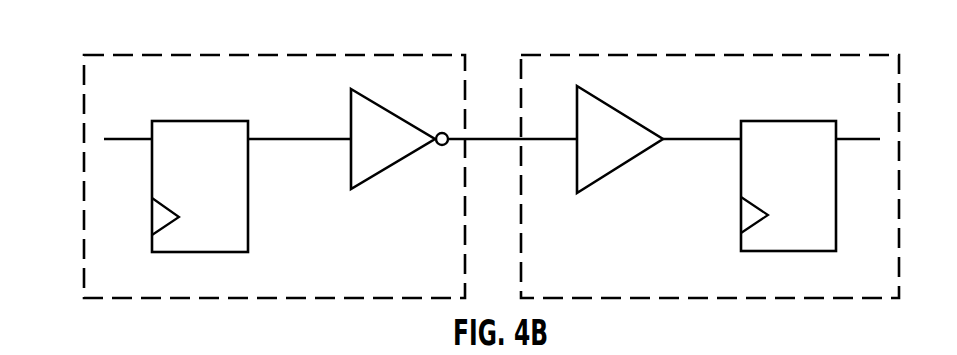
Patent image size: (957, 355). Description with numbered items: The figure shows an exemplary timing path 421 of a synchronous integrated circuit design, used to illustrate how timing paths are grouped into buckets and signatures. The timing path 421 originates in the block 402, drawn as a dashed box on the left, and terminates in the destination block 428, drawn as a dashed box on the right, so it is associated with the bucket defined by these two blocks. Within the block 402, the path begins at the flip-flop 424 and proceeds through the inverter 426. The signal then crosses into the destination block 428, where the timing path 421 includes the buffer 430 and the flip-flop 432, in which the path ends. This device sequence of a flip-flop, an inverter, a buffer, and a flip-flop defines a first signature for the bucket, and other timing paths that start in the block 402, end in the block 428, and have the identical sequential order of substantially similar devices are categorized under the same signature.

The timing path 421 is at (103, 33).
The block 402 is at (260, 54).
The flip-flop 424 is at (212, 120).
The inverter 426 is at (350, 123).
The destination block 428 is at (700, 54).
The buffer 430 is at (593, 183).
The flip-flop 432 is at (788, 119).